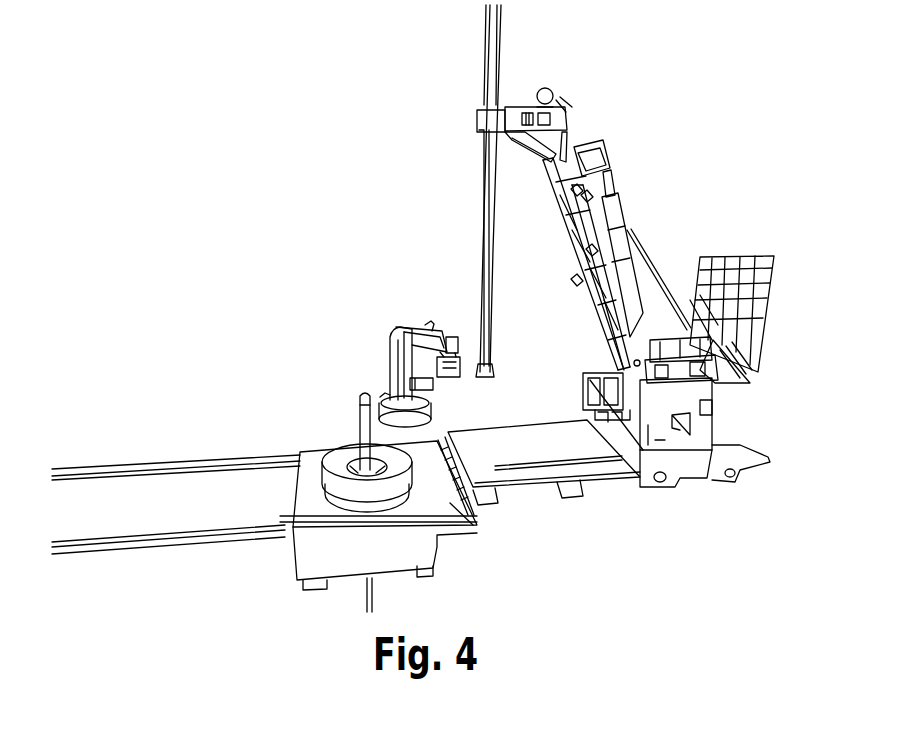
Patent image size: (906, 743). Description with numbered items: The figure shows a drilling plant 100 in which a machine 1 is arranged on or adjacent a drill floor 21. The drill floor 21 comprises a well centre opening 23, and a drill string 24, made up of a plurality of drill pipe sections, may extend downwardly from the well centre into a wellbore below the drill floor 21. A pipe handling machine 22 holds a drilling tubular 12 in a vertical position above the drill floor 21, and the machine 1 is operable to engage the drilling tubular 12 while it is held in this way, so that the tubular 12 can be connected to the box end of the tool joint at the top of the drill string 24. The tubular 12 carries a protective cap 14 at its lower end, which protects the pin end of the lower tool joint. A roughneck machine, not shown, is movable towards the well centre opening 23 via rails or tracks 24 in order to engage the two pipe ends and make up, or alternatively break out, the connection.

The automated pipe handling system 100 is at (270, 230).
The drilling tubular 12 is at (498, 42).
The protective cap 14 is at (496, 377).
The pipe handling machine 22 is at (630, 235).
The machine 1 is at (373, 340).
The drill string 24 is at (206, 470).
The well centre opening 23 is at (341, 455).
The drill floor 21 is at (457, 514).